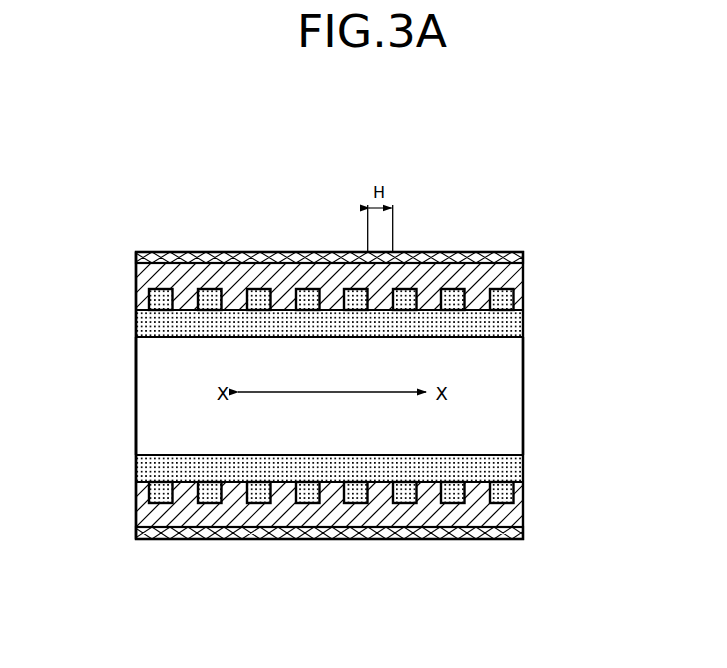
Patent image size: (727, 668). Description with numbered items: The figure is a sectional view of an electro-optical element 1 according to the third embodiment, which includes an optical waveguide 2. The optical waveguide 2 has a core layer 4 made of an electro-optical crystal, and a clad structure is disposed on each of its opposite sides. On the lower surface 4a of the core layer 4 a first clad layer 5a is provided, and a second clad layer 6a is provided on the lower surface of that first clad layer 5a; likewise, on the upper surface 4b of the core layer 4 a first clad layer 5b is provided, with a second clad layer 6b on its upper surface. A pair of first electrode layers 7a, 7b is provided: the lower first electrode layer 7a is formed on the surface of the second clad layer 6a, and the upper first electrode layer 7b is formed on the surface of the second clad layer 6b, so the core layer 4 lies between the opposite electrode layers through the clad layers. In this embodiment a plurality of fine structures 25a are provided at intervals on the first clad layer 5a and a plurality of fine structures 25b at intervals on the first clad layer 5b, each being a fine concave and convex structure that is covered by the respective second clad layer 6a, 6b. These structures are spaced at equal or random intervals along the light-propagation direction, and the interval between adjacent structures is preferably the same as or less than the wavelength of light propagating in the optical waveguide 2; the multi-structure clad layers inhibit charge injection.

The electro-optical element 1 is at (558, 227).
The optical waveguide 2 is at (115, 423).
The core layer 4 is at (136, 385).
The lower surface of the core layer 4a is at (282, 450).
The upper surface of the core layer 4b is at (300, 343).
The first clad layer 5a is at (237, 465).
The first clad layer 5b is at (268, 328).
The second clad layer 6a is at (197, 508).
The second clad layer 6b is at (223, 290).
The first electrode layer 7a is at (145, 539).
The first electrode layer 7b is at (162, 252).
The fine structures 25a is at (257, 497).
The fine structures 25b is at (308, 297).